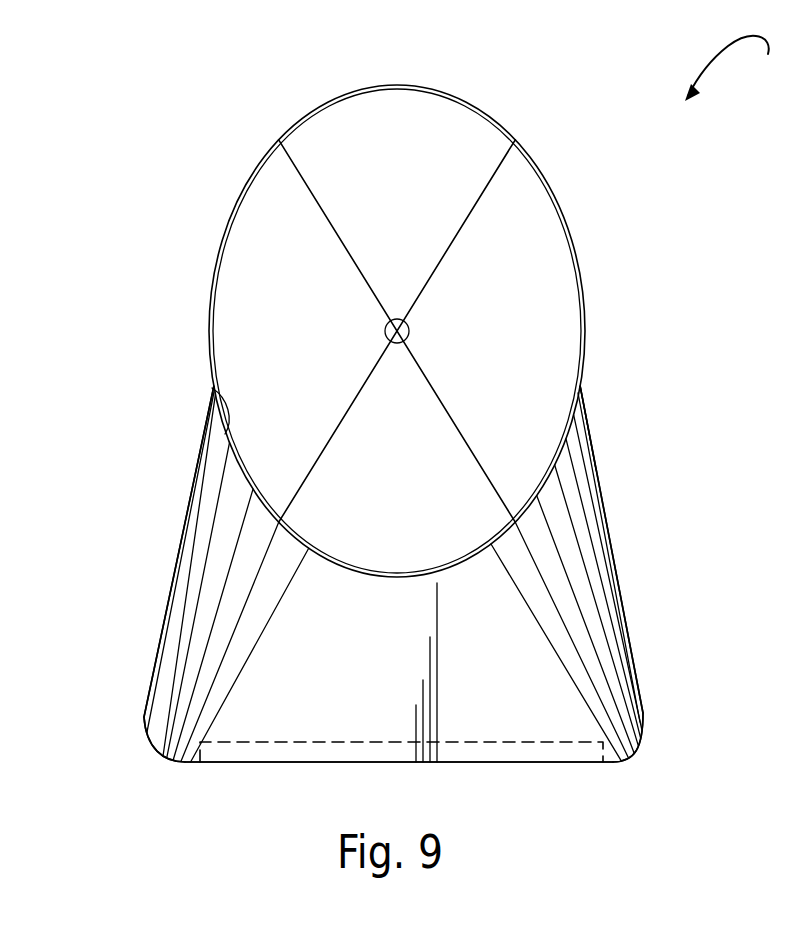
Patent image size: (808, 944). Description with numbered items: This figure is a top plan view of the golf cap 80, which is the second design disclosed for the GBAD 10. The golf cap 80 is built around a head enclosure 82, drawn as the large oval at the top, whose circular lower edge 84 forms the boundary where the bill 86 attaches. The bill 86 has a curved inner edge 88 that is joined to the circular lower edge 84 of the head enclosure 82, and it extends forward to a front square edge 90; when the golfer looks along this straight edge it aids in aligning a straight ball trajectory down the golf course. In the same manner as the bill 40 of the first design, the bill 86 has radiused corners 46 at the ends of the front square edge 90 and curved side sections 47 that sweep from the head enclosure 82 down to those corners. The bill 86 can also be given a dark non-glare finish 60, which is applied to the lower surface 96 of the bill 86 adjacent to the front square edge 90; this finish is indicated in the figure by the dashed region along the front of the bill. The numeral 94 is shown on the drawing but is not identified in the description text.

The GBAD 10 is at (727, 68).
The golf cap 80 is at (441, 331).
The head enclosure 82 is at (521, 214).
The base front face 94 is at (253, 700).
The bill 86 is at (184, 540).
The circular lower edge 84 is at (578, 400).
The curved side sections 47 is at (216, 468).
The bill 40 is at (581, 470).
The curved inner edge 88 is at (210, 387).
The radiused corners 46 is at (150, 740).
The dark non-glare finish 60 is at (292, 745).
The lower surface 96 is at (445, 725).
The front square edge 90 is at (515, 765).